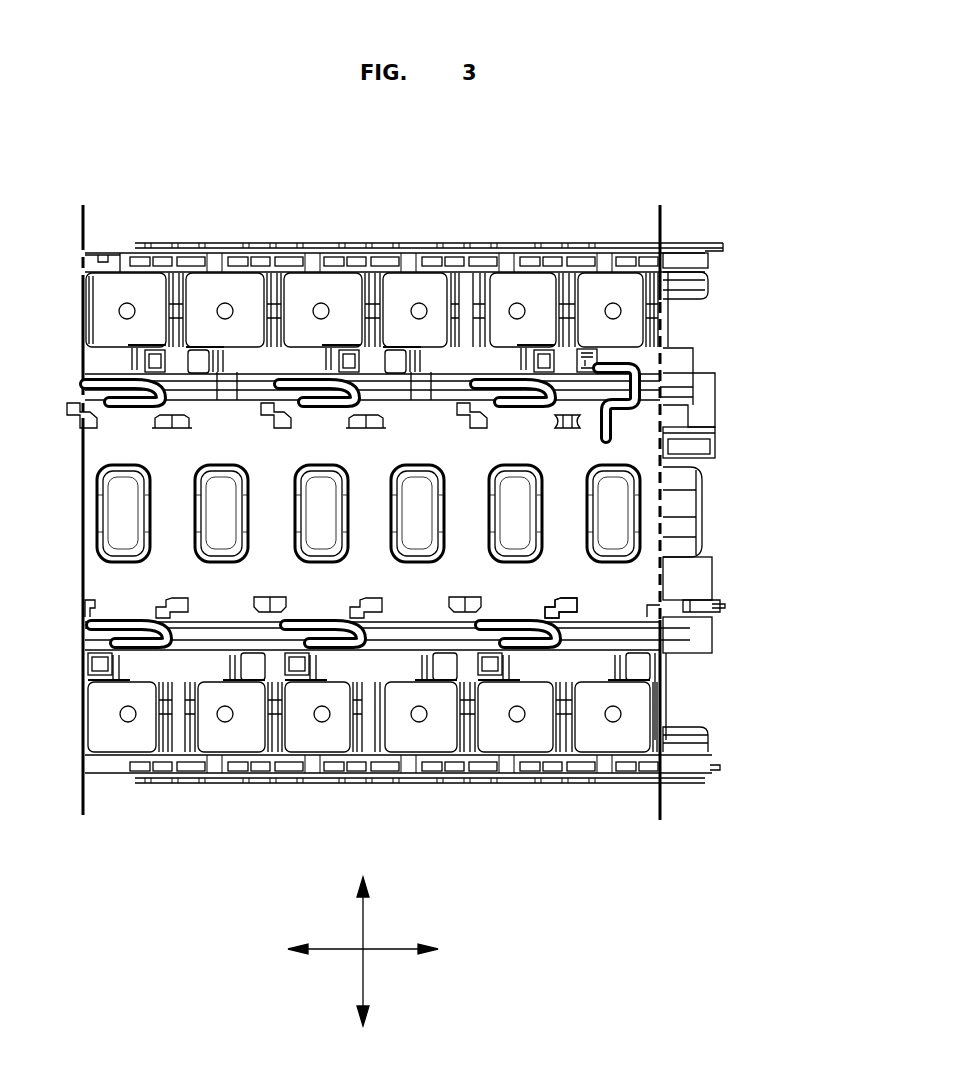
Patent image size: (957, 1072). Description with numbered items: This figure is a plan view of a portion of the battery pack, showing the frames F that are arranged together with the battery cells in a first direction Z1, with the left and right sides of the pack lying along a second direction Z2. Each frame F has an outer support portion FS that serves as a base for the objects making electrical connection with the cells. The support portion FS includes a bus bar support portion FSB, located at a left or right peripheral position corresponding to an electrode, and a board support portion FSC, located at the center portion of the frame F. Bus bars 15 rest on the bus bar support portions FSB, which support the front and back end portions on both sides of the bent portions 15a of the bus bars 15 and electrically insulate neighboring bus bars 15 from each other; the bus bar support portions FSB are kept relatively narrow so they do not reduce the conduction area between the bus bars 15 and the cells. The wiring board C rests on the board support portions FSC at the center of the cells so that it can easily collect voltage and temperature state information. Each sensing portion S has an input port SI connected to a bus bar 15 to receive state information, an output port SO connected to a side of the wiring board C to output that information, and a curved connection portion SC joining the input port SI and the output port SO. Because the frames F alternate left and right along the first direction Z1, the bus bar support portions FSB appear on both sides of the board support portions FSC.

The bus bar 15 is at (608, 283).
The bent portion 15a is at (653, 280).
The bus bar support portion FSB is at (670, 330).
The support portion FS is at (797, 325).
The board support portion FSC is at (705, 447).
The wiring board C is at (647, 516).
The sensing portion S is at (560, 594).
The output port SO is at (577, 612).
The connection portion SC is at (480, 630).
The input port SI is at (492, 667).
The frame F is at (255, 768).
The first direction Z1 is at (381, 951).
The second direction Z2 is at (363, 938).